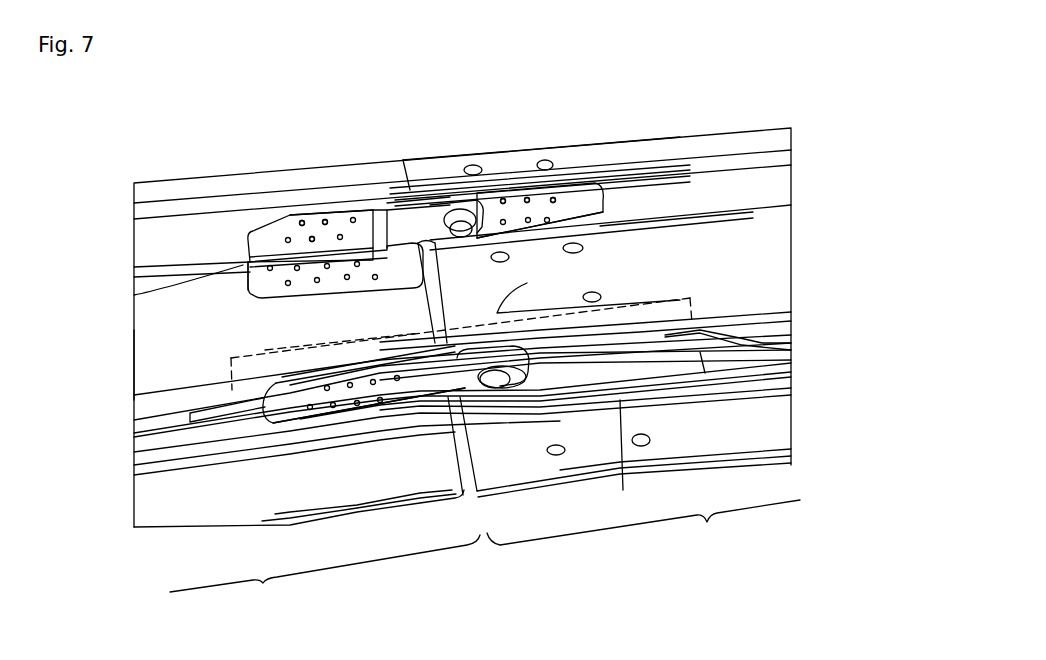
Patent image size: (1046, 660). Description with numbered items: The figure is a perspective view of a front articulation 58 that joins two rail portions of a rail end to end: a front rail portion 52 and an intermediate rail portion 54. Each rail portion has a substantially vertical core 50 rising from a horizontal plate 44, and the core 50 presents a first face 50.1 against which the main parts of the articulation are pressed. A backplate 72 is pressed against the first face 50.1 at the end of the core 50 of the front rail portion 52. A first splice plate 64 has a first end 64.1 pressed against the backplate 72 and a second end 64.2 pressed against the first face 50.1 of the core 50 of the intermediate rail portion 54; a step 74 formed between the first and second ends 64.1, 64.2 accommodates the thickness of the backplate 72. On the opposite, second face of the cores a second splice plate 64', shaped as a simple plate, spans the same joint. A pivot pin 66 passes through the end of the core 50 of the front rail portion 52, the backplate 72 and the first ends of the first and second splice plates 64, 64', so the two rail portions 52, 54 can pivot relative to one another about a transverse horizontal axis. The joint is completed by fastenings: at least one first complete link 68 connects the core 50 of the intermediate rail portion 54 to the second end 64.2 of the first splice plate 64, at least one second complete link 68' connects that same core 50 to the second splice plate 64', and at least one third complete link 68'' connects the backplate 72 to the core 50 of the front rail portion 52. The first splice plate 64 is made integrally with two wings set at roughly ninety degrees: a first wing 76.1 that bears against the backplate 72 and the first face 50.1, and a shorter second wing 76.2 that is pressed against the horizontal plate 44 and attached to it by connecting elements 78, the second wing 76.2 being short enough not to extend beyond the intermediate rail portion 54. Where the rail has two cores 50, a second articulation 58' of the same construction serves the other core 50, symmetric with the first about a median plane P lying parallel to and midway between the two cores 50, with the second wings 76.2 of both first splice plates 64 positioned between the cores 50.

The horizontal plate 44 is at (170, 341).
The core 50 is at (163, 205).
The first face 50.1 is at (753, 185).
The front rail portion 52 is at (643, 526).
The intermediate rail portion 54 is at (325, 576).
The front articulation 58 is at (542, 147).
The second articulation 58' is at (462, 395).
The first splice plate 64 is at (327, 369).
The second splice plate 64' is at (369, 330).
The first end of the first splice plate 64.1 is at (477, 238).
The second end of the first splice plate 64.2 is at (248, 237).
The pivot pin 66 is at (470, 160).
The first complete link 68 is at (312, 189).
The second complete link 68' is at (332, 469).
The third complete link 68'' is at (529, 160).
The backplate 72 is at (593, 227).
The step 74 is at (415, 170).
The first wing 76.1 is at (267, 208).
The second wing 76.2 is at (277, 295).
The connecting elements 78 is at (247, 260).
The hinge plane P is at (461, 403).